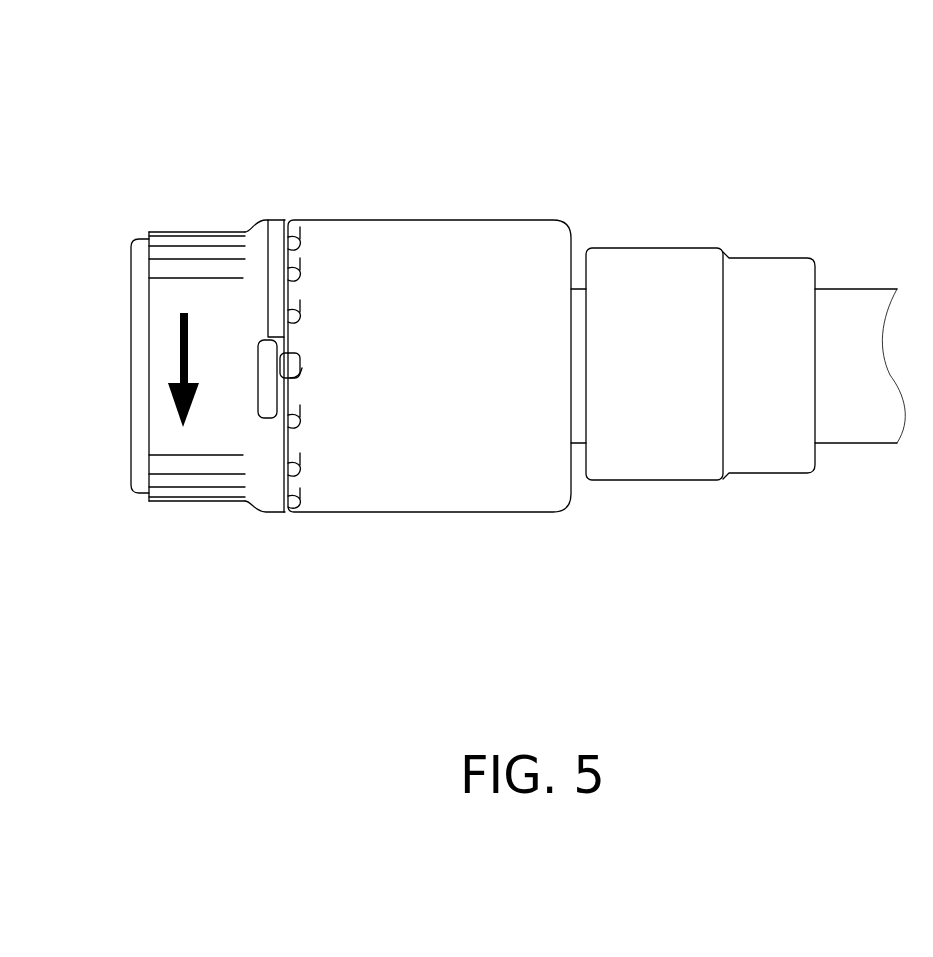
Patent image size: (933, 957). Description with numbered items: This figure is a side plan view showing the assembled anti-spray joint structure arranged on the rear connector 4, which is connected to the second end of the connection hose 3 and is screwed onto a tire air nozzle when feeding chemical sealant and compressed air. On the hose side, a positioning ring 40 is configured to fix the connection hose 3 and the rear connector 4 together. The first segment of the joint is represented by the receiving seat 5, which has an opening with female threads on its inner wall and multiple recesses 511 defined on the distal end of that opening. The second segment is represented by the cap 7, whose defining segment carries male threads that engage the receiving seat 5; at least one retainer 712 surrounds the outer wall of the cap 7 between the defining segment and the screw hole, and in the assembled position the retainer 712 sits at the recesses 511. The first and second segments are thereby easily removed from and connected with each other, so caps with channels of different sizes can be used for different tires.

The rear connector 4 is at (354, 113).
The cap 7 is at (193, 233).
The retainer 712 is at (288, 363).
The receiving seat 5 is at (447, 497).
The recesses 511 is at (292, 417).
The positioning ring 40 is at (752, 448).
The connection hose 3 is at (870, 422).